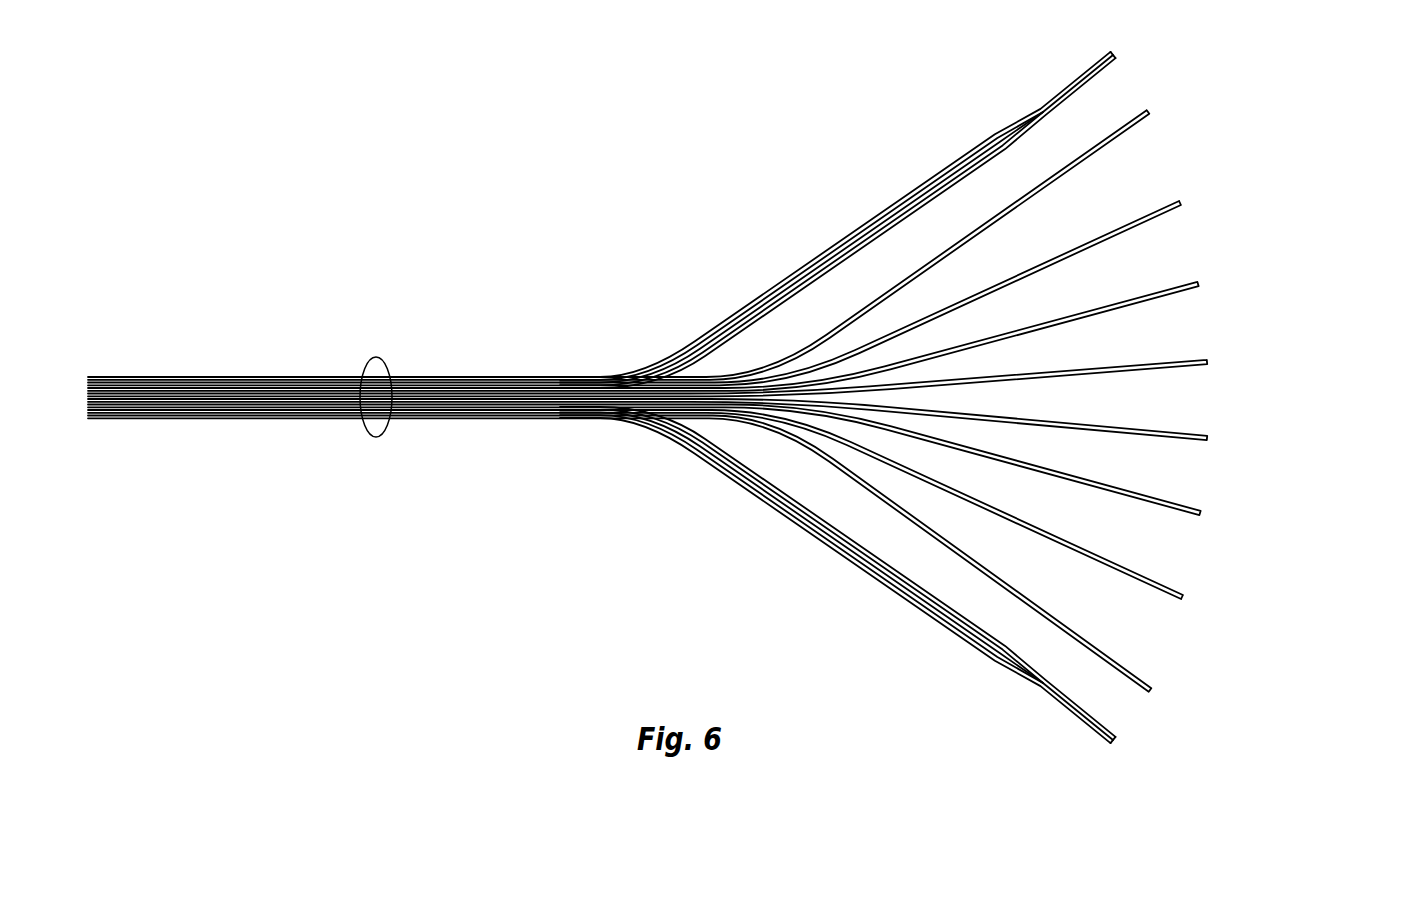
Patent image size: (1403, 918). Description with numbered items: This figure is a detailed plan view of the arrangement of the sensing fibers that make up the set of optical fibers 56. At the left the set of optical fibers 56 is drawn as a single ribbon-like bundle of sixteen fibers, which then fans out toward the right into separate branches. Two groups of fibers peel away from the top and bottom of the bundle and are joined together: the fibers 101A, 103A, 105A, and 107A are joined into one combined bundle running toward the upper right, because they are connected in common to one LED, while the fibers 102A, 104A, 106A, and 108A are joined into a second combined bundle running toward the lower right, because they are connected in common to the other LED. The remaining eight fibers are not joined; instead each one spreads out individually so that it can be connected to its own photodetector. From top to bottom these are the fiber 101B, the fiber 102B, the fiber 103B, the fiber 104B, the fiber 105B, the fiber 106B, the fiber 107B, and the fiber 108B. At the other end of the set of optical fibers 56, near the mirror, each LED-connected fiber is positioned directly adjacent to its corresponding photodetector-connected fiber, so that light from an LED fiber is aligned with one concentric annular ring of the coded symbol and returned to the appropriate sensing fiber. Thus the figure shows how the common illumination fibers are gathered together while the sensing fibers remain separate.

The set of optical fibers 56 is at (387, 359).
The fiber 101A is at (1113, 40).
The fiber 103A is at (801, 246).
The fiber 105A is at (836, 219).
The fiber 107A is at (838, 223).
The fiber 102A is at (1125, 735).
The fiber 104A is at (801, 549).
The fiber 106A is at (836, 577).
The fiber 108A is at (838, 572).
The fiber 101B is at (647, 238).
The fiber 102B is at (663, 286).
The fiber 103B is at (673, 331).
The fiber 104B is at (677, 372).
The fiber 105B is at (677, 425).
The fiber 106B is at (674, 468).
The fiber 107B is at (665, 511).
The fiber 108B is at (649, 562).